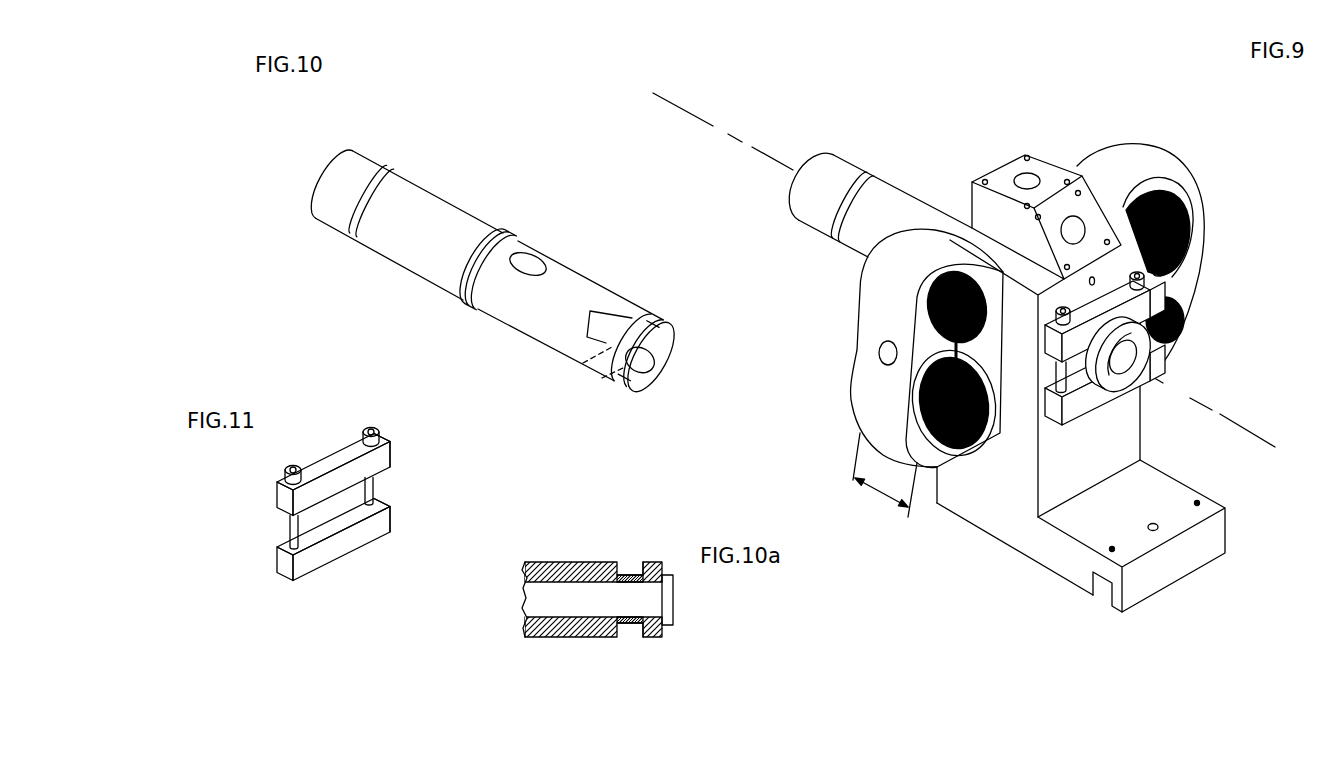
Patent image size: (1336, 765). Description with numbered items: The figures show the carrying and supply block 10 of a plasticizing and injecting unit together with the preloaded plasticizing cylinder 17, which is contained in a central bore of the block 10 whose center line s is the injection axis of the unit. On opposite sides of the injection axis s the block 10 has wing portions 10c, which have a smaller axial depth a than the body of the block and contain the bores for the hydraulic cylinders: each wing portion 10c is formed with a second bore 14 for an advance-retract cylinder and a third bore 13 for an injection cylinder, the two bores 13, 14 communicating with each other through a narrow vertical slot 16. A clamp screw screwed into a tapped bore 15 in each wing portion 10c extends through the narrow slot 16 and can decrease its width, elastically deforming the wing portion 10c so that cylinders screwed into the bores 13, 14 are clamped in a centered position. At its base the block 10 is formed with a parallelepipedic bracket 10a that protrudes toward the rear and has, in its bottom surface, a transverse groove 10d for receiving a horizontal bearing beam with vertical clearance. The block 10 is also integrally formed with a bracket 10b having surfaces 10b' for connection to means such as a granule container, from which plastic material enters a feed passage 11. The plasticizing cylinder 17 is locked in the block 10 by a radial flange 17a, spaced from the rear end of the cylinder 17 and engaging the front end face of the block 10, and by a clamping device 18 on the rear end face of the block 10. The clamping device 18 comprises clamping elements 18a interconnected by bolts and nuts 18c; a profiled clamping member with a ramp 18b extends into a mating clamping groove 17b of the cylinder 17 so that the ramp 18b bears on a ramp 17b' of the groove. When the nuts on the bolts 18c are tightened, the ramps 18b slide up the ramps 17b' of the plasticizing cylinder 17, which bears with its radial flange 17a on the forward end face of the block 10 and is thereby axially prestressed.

In FIG. 9, the carrying and supply block 10 is at (963, 365).
In FIG. 9, the bracket 10a is at (1101, 555).
In FIG. 9, the bracket 10b is at (1027, 309).
In FIG. 9, the surfaces 10b' is at (998, 179).
In FIG. 9, the wing portions 10c is at (907, 270).
In FIG. 9, the transverse groove 10d is at (1103, 580).
In FIG. 9, the feed passage 11 is at (1032, 183).
In FIG. 9, the third bores 13 is at (945, 445).
In FIG. 9, the second bores 14 is at (930, 310).
In FIG. 9, the tapped bore 15 is at (912, 388).
In FIG. 9, the narrow vertical slot 16 is at (947, 352).
In FIG. 9, the plasticizing cylinder 17 is at (858, 165).
In FIG. 10, the plasticizing cylinder 17 is at (503, 256).
In FIG. 10A, the plasticizing cylinder 17 is at (598, 593).
In FIG. 10, the radial flange 17a is at (513, 233).
In FIG. 10, the clamping groove 17b is at (641, 323).
In FIG. 10A, the clamping groove 17b is at (613, 591).
In FIG. 10, the ramp 17b' is at (581, 357).
In FIG. 10A, the ramp 17b' is at (648, 593).
In FIG. 9, the clamping device 18 is at (1129, 360).
In FIG. 11, the clamping device 18 is at (340, 534).
In FIG. 9, the clamping elements 18a is at (1050, 410).
In FIG. 11, the clamping elements 18a is at (381, 528).
In FIG. 9, the ramp 18b is at (1078, 393).
In FIG. 11, the ramp 18b is at (315, 552).
In FIG. 9, the bolts and nuts 18c is at (1160, 272).
In FIG. 11, the bolts and nuts 18c is at (290, 528).
In FIG. 9, the axial depth a is at (880, 483).
In FIG. 9, the center line s is at (963, 274).